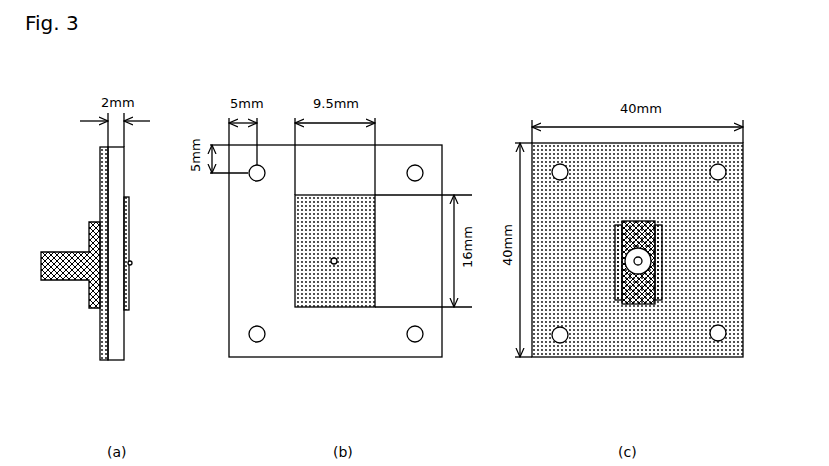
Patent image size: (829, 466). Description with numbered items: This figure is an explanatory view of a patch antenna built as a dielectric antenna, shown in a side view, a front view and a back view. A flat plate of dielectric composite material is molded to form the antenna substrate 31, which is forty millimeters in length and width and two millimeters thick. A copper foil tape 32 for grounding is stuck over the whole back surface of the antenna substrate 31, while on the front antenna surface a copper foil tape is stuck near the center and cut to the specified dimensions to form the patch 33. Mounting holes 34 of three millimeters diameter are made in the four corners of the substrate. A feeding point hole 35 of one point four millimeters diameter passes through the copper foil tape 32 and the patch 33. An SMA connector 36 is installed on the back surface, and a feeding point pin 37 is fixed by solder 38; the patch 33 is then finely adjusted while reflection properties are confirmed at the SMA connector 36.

The antenna substrate 31 is at (115, 183).
The copper foil tape 32 is at (102, 333).
The patch 33 is at (127, 300).
The mounting holes 34 is at (417, 168).
The feeding point hole 35 is at (334, 264).
The SMA connector 36 is at (70, 250).
The feeding point pin 37 is at (128, 263).
The solder 38 is at (660, 276).